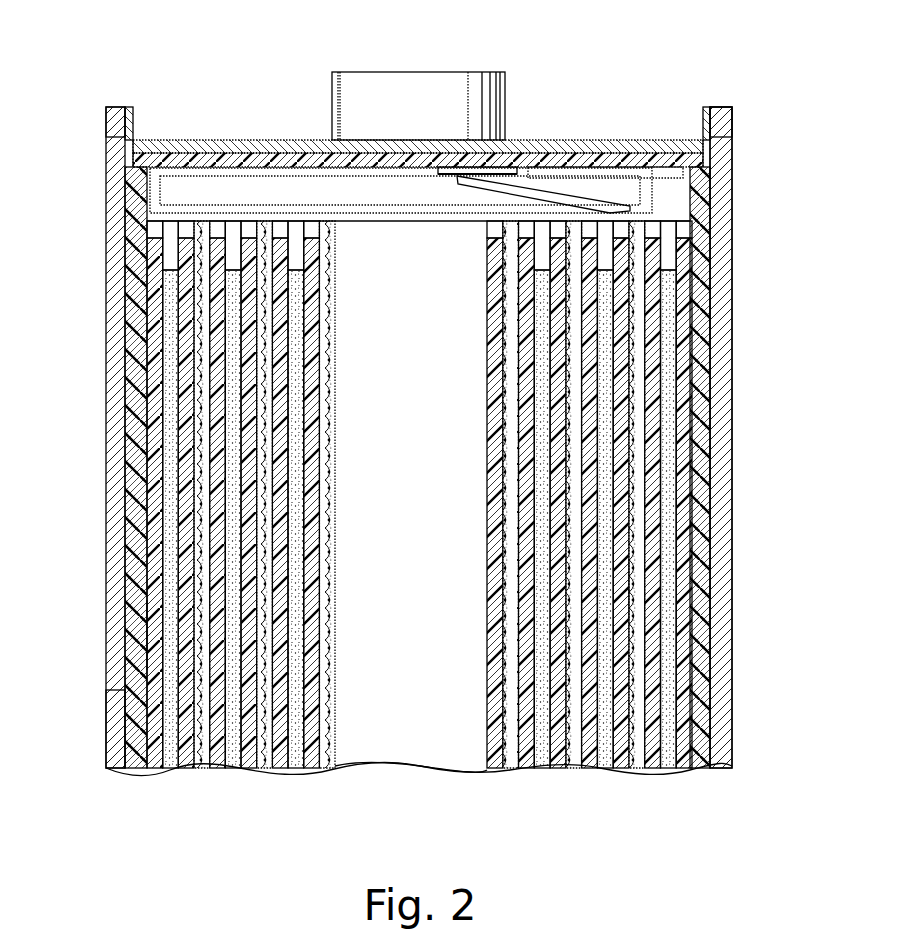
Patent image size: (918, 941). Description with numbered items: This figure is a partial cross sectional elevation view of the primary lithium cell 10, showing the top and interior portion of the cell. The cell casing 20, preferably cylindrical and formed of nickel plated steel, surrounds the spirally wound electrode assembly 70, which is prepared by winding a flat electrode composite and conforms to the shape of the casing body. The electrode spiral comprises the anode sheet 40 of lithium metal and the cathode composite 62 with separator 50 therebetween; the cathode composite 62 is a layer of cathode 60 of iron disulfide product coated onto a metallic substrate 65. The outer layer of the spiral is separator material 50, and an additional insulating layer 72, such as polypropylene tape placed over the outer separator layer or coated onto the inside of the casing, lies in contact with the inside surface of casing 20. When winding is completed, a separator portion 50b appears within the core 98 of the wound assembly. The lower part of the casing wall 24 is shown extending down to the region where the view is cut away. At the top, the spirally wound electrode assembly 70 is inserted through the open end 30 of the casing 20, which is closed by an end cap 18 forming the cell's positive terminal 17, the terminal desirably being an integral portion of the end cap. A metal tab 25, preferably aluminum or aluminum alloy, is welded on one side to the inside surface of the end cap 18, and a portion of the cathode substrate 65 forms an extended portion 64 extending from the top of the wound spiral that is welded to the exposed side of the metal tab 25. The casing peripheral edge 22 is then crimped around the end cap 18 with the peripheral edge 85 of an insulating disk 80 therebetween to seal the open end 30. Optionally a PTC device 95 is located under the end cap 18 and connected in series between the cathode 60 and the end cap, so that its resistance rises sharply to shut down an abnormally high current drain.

The cell 10 is at (744, 290).
The positive terminal 17 is at (415, 72).
The end cap 18 is at (237, 140).
The casing 20 is at (110, 205).
The casing peripheral edge 22 is at (106, 128).
The housing side wall bottom 24 is at (110, 710).
The metal tab 25 is at (633, 208).
The open end 30 is at (134, 142).
The anode sheet 40 is at (180, 410).
The separator 50 is at (160, 500).
The separator portion 50b is at (482, 768).
The cathode 60 is at (647, 542).
The cathode composite 62 is at (181, 560).
The extended portion 64 is at (648, 230).
The metallic substrate 65 is at (637, 590).
The spirally wound electrode assembly 70 is at (152, 635).
The insulating layer 72 is at (133, 318).
The insulating disk 80 is at (710, 162).
The peripheral edge of insulating disk 85 is at (137, 107).
The PTC device 95 is at (550, 172).
The core 98 is at (424, 656).